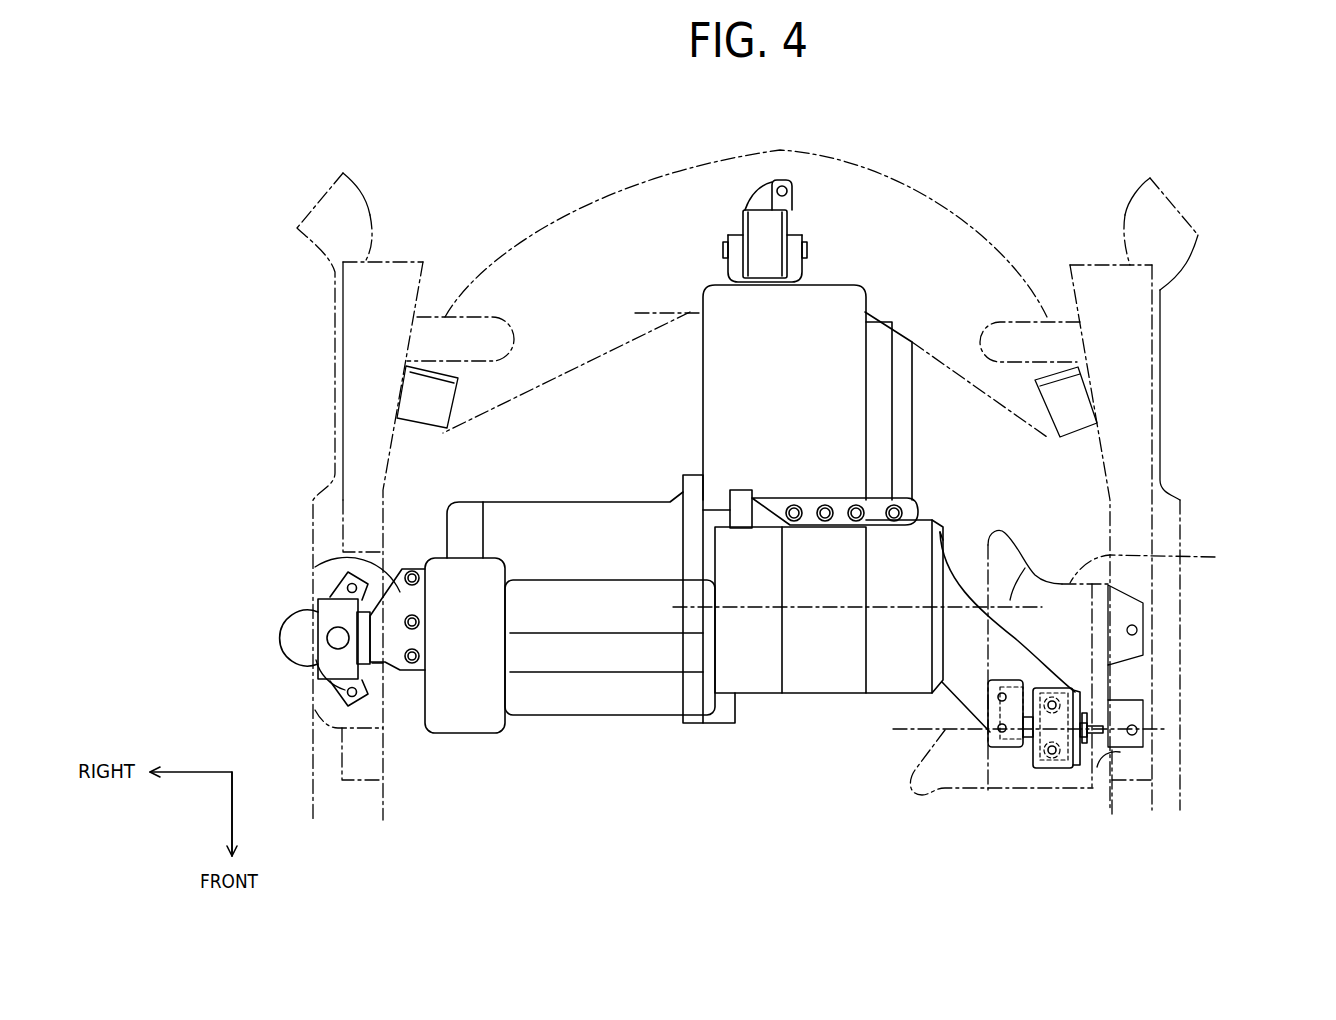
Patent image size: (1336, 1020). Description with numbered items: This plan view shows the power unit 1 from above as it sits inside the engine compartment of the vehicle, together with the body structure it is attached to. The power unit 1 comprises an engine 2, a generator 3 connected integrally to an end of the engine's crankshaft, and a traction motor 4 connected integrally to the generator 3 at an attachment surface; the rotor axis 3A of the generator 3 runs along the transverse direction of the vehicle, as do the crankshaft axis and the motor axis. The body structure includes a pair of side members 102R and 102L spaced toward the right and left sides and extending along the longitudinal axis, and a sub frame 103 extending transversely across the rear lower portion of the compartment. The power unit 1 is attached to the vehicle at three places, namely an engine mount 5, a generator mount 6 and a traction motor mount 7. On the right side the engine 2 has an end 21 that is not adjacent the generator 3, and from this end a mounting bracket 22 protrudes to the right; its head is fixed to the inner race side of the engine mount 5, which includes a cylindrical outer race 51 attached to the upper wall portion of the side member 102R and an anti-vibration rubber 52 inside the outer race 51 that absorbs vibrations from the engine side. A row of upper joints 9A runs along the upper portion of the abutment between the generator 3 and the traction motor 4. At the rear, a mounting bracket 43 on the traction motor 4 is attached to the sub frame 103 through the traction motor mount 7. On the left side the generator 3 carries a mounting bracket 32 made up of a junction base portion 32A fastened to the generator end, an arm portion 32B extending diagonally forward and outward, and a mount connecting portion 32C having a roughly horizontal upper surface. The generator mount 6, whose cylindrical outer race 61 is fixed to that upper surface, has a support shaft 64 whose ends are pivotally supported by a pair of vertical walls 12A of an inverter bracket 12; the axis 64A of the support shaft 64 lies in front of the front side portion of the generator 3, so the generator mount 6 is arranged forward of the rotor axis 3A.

The power unit 1 is at (518, 178).
The engine 2 is at (583, 500).
The generator 3 is at (828, 696).
The rotor axis 3A is at (1025, 568).
The traction motor 4 is at (703, 378).
The engine mount 5 is at (283, 649).
The generator mount 6 is at (1082, 700).
The traction motor mount 7 is at (750, 192).
The upper joints 9A is at (894, 505).
The inverter bracket 12 is at (1117, 660).
The vertical walls 12A is at (997, 748).
The end of the engine 21 is at (423, 698).
The mounting bracket 22 is at (400, 593).
The mounting bracket 32 is at (1089, 663).
The junction base portion 32A is at (940, 532).
The arm portion 32B is at (973, 683).
The mount connecting portion 32C is at (1052, 686).
The mounting bracket 43 is at (728, 268).
The cylindrical outer race 51 is at (318, 628).
The anti-vibration rubber 52 is at (318, 637).
The cylindrical outer race 61 is at (1048, 770).
The support shaft 64 is at (1082, 720).
The axis of the support shaft 64A is at (913, 733).
The side member 102R is at (335, 405).
The side member 102L is at (1178, 518).
The sub frame 103 is at (920, 238).